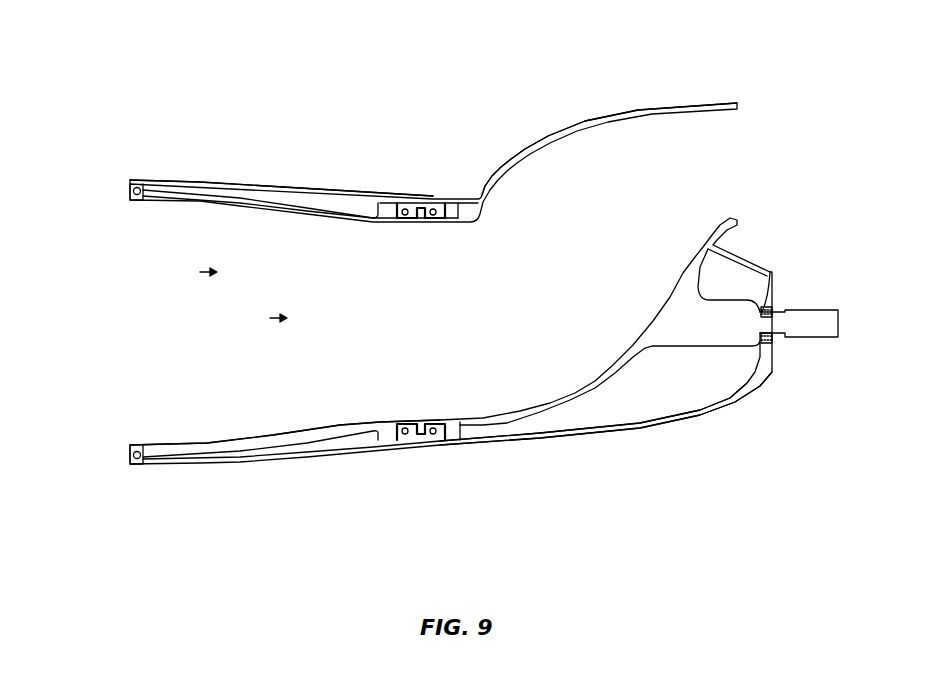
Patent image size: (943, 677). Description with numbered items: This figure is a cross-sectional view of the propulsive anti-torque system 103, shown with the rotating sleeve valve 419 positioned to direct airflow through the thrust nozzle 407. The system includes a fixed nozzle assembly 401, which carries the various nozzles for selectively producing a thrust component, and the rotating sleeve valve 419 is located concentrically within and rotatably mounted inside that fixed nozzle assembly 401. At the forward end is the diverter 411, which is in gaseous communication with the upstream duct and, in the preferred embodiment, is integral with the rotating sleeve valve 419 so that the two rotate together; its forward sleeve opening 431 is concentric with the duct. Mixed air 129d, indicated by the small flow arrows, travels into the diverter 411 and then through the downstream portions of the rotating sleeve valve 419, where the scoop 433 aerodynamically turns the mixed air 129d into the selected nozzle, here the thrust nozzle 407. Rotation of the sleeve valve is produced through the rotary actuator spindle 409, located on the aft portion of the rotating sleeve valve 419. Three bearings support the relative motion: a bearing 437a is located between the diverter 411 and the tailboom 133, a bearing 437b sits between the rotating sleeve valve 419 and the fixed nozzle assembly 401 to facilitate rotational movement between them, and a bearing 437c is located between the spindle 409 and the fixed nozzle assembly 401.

The propulsive anti-torque system 103 is at (398, 103).
The thrust nozzle 407 is at (655, 105).
The tailboom 133 is at (193, 180).
The diverter 411 is at (310, 208).
The forward sleeve opening 431 is at (130, 200).
The bearing 437a is at (130, 465).
The bearing 437b is at (433, 440).
The bearing 437c is at (773, 302).
The rotating sleeve valve 419 is at (659, 382).
The fixed nozzle assembly 401 is at (498, 449).
The scoop 433 is at (590, 390).
The rotary actuator spindle 409 is at (788, 337).
The mixed air 129d is at (215, 361).